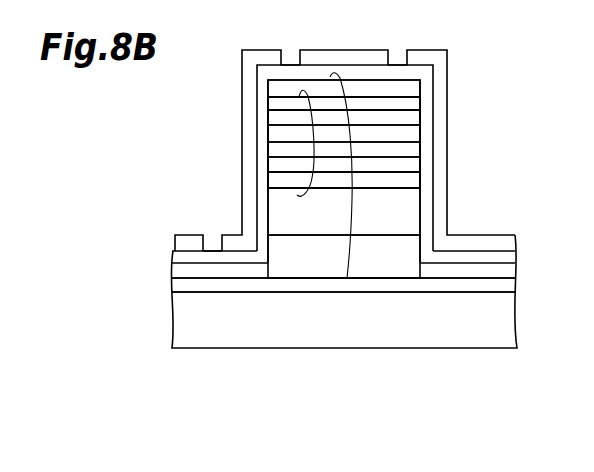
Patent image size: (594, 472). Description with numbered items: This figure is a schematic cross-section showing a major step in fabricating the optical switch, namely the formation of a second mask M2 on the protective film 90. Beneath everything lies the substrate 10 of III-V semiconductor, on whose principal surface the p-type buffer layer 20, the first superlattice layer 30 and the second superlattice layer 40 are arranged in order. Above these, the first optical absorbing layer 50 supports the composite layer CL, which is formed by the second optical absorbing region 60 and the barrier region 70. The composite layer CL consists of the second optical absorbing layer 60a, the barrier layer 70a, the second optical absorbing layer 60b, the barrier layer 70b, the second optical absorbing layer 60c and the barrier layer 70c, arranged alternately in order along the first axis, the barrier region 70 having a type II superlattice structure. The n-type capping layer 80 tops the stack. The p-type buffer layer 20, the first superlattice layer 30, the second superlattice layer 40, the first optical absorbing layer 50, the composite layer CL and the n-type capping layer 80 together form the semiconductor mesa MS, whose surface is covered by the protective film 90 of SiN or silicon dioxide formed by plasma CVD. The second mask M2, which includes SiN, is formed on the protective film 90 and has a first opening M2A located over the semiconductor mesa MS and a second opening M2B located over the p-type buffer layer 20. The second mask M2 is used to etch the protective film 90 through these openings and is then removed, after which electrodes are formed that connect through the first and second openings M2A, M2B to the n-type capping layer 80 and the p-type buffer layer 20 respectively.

The substrate 10 is at (508, 320).
The p-type buffer layer 20 is at (510, 288).
The first superlattice layer 30 is at (508, 272).
The second superlattice layer 40 is at (413, 245).
The first optical absorbing layer 50 is at (413, 203).
The second optical absorbing region 60 is at (506, 114).
The second optical absorbing layer 60a is at (413, 180).
The second optical absorbing layer 60b is at (413, 150).
The second optical absorbing layer 60c is at (413, 119).
The barrier region 70 is at (182, 95).
The barrier layer 70a is at (275, 165).
The barrier layer 70b is at (275, 136).
The barrier layer 70c is at (275, 104).
The n-type capping layer 80 is at (413, 89).
The protective film 90 is at (425, 73).
The second mask M2 is at (250, 51).
The first opening M2A is at (293, 50).
The second opening M2B is at (213, 240).
The composite layer CL is at (314, 181).
The semiconductor mesa MS is at (354, 212).